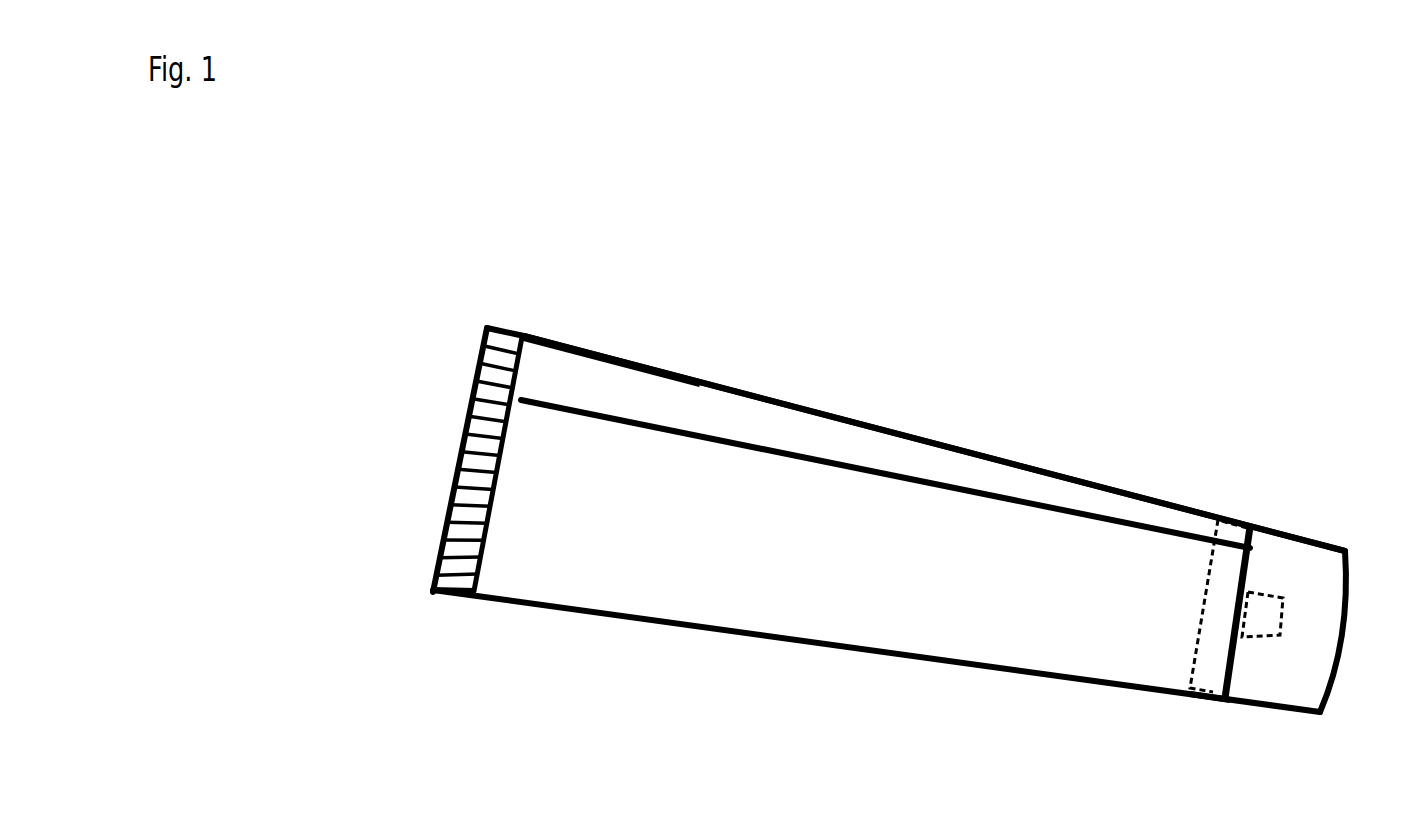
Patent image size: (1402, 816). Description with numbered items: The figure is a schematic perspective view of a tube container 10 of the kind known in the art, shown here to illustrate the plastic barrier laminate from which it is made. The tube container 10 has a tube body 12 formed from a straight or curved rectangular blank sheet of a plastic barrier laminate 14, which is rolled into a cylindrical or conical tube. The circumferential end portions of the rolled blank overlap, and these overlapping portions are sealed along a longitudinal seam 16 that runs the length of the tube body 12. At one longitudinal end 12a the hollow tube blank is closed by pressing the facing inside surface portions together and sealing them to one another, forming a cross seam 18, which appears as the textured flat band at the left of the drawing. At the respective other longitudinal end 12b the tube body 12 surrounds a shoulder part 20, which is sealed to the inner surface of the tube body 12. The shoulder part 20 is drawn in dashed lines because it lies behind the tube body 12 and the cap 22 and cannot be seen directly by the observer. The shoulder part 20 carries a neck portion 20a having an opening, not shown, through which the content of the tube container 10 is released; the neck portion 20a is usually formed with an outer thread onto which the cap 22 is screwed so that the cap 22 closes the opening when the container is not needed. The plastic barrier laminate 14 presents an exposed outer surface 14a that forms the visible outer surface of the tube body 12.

The tube container 10 is at (450, 218).
The tube body 12 is at (865, 437).
The longitudinal end 12a is at (402, 656).
The other longitudinal end 12b is at (1212, 712).
The plastic barrier laminate 14 is at (630, 345).
The exposed outer surface 14a is at (707, 497).
The longitudinal seam 16 is at (777, 448).
The cross seam 18 is at (470, 435).
The shoulder part 20 is at (1203, 612).
The neck portion 20a is at (1276, 595).
The cap 22 is at (1322, 567).